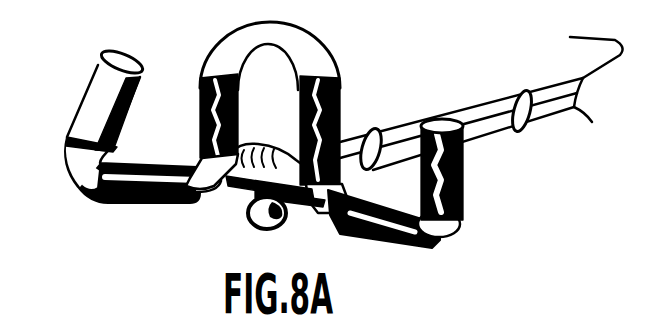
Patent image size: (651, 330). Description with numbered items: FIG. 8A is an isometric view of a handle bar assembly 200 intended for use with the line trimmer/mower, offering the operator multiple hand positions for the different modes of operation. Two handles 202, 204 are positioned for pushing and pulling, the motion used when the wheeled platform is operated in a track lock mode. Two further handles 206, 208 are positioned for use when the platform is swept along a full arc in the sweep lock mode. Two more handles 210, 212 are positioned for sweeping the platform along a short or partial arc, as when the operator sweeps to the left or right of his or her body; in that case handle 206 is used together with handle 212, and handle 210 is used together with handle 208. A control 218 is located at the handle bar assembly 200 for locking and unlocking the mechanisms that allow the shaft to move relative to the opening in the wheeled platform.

The handle bar assembly 200 is at (416, 95).
The handle 202 is at (123, 163).
The handle 204 is at (410, 250).
The handle 206 is at (205, 82).
The handle 208 is at (340, 93).
The handle 210 is at (72, 107).
The handle 212 is at (467, 182).
The control 218 is at (247, 228).